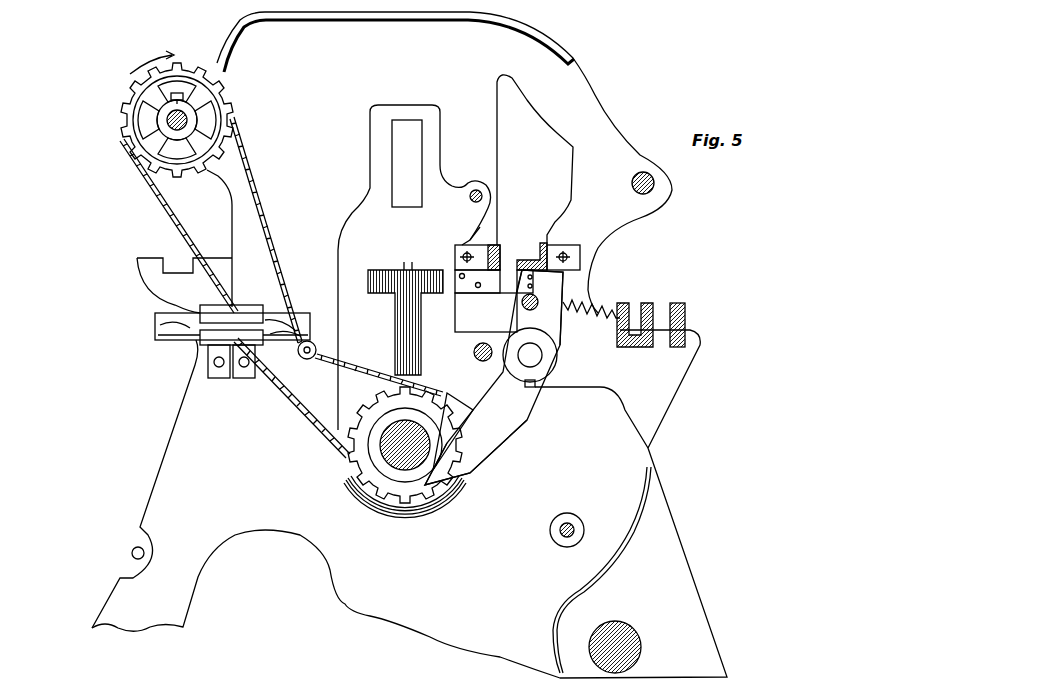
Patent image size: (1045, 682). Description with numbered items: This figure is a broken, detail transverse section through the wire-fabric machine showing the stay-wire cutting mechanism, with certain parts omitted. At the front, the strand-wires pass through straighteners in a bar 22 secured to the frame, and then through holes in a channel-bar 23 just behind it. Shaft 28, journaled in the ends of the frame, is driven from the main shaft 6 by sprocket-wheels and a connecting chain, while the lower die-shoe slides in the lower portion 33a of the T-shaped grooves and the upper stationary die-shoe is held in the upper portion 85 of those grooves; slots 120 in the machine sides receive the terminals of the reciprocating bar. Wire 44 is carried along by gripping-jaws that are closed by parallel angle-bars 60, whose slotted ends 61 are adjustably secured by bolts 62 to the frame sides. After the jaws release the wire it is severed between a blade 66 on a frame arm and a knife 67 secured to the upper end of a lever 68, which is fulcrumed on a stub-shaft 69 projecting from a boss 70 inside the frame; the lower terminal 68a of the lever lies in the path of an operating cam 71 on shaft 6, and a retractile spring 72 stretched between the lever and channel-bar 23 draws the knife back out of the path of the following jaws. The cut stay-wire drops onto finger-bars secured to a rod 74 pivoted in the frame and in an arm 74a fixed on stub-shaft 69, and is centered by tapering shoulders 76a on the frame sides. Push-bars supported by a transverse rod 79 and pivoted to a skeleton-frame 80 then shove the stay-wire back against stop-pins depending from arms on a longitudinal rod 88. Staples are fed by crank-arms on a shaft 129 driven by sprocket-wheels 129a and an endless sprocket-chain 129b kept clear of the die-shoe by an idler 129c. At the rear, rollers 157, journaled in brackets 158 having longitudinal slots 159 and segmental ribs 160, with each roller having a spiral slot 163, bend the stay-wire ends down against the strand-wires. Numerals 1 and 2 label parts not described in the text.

The frame plate 1 is at (409, 345).
The shaft 2 is at (617, 622).
The shaft 6 is at (398, 452).
The bar 22 is at (685, 345).
The channel-bar 23 is at (638, 347).
The shaft 28 is at (655, 183).
The lower portion of T-shaped grooves 33a is at (395, 318).
The wire 44 is at (460, 245).
The angle-bars 60 is at (540, 258).
The slotted ends 61 is at (458, 244).
The bolts 62 is at (473, 253).
The blade 66 is at (478, 286).
The knife 67 is at (524, 292).
The lever 68 is at (494, 377).
The lower terminal 68a is at (476, 452).
The stub-shaft 69 is at (535, 355).
The boss 70 is at (557, 368).
The operating cam 71 is at (448, 392).
The retractile spring 72 is at (604, 307).
The rod 74 is at (530, 311).
The arm 74a is at (545, 336).
The tapering shoulders 76a is at (460, 330).
The transverse rod 79 is at (480, 357).
The skeleton-frame 80 is at (568, 524).
The upper portion of T-shaped grooves 85 is at (408, 270).
The longitudinal rod 88 is at (477, 190).
The slots 120 is at (405, 135).
The shaft 129 is at (170, 118).
The sprocket-wheels 129a is at (140, 162).
The endless sprocket-chain 129b is at (314, 422).
The idler 129c is at (317, 349).
The rollers 157 is at (178, 340).
The brackets 158 is at (242, 378).
The longitudinal slots 159 is at (236, 318).
The segmental ribs 160 is at (363, 680).
The spiral slot 163 is at (156, 322).